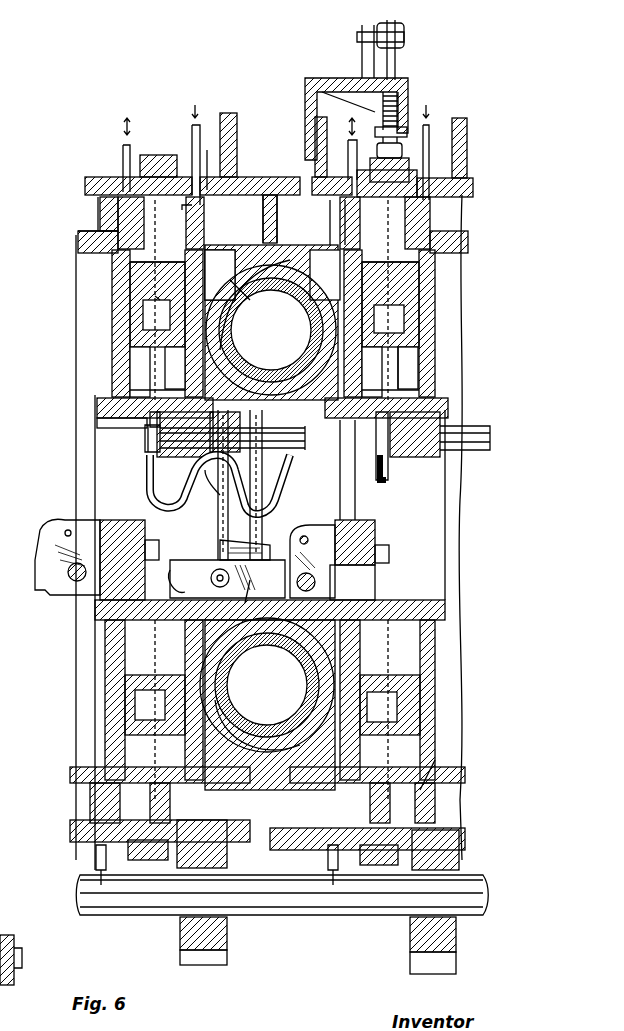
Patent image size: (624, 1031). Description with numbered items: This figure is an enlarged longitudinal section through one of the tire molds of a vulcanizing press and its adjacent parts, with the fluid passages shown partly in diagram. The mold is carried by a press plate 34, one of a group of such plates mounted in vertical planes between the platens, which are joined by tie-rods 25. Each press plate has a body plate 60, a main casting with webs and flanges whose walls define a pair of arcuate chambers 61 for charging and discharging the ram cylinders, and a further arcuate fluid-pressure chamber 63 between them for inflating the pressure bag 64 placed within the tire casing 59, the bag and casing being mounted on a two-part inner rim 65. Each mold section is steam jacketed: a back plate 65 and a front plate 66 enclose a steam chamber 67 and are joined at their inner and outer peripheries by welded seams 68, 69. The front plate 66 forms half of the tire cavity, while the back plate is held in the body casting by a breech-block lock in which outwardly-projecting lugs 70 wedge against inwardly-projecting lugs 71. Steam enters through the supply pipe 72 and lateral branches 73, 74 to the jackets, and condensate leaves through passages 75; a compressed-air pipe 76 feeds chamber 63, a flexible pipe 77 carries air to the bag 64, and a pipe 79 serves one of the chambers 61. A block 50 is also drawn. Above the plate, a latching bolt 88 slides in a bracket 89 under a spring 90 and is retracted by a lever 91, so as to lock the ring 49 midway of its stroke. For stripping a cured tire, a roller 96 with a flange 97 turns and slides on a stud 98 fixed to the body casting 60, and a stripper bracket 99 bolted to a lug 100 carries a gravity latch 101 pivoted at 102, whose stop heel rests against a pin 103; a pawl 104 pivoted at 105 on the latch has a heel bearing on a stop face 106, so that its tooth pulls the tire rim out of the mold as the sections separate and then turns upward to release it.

The tie-rods 25 is at (320, 895).
The press plates 34 is at (83, 650).
The ring 49 is at (372, 165).
The block 50 is at (138, 168).
The tire casing 59 is at (158, 298).
The body plate 60 is at (115, 412).
The arcuate chambers 61 is at (150, 702).
The arcuate fluid-pressure chamber 63 is at (155, 315).
The pressure bag 64 is at (400, 358).
The back plate 65 is at (180, 325).
The front plate 66 is at (180, 355).
The steam chamber 67 is at (200, 280).
The welded seam 68 is at (150, 418).
The welded seam 69 is at (262, 240).
The outwardly-projecting lugs 70 is at (207, 175).
The inwardly-projecting lugs 71 is at (233, 170).
The steam supply pipe 72 is at (190, 130).
The lateral branch 73 is at (95, 240).
The lateral branch 74 is at (228, 245).
The discharge passages 75 is at (410, 770).
The compressed-air pipe 76 is at (123, 150).
The flexible pipe 77 is at (150, 482).
The pipe 79 is at (95, 852).
The latching bolt 88 is at (429, 130).
The bracket 89 is at (325, 80).
The spring 90 is at (398, 92).
The lever 91 is at (375, 32).
The roller 96 is at (225, 495).
The flange 97 is at (320, 472).
The stud 98 is at (220, 440).
The bracket 99 is at (365, 535).
The lug 100 is at (350, 598).
The gravity latch 101 is at (50, 545).
The pivot 102 is at (355, 584).
The pin 103 is at (306, 535).
The pawl 104 is at (215, 565).
The pivot 105 is at (215, 578).
The stop face 106 is at (260, 545).